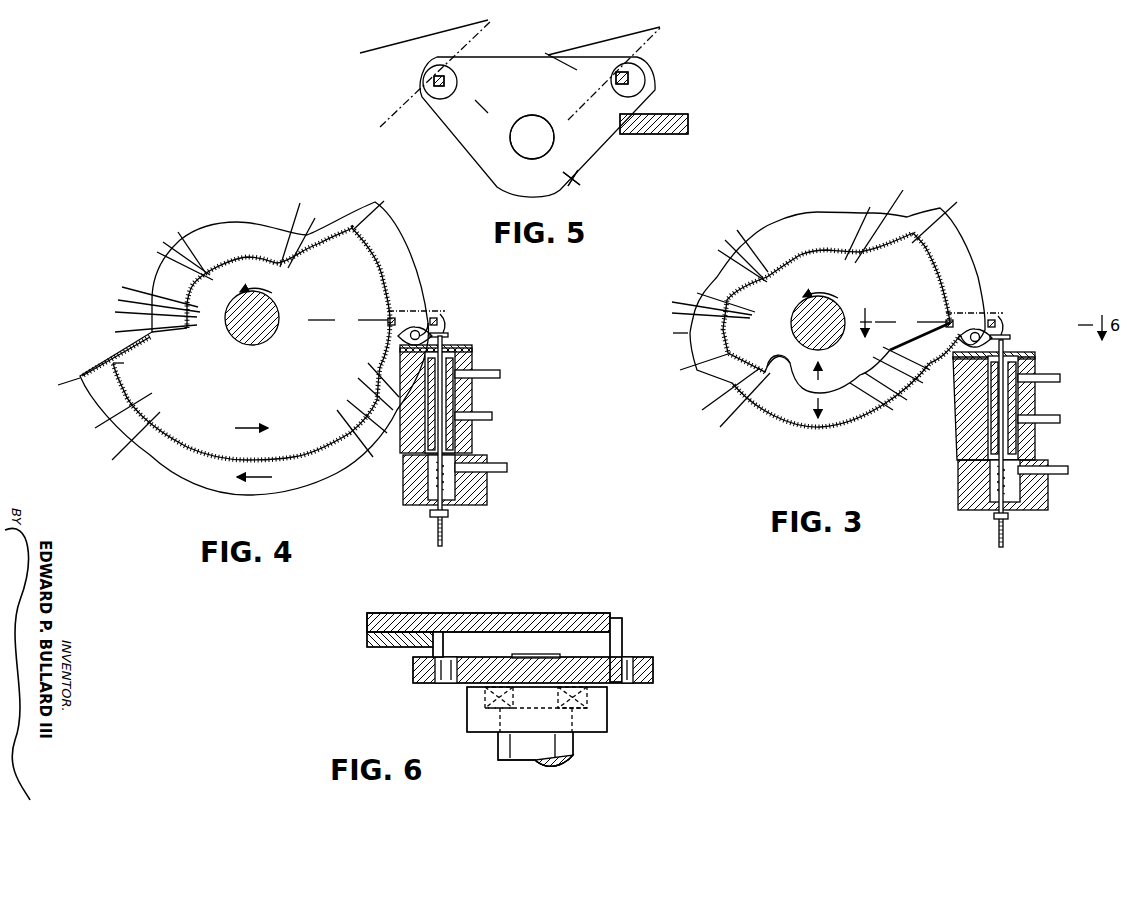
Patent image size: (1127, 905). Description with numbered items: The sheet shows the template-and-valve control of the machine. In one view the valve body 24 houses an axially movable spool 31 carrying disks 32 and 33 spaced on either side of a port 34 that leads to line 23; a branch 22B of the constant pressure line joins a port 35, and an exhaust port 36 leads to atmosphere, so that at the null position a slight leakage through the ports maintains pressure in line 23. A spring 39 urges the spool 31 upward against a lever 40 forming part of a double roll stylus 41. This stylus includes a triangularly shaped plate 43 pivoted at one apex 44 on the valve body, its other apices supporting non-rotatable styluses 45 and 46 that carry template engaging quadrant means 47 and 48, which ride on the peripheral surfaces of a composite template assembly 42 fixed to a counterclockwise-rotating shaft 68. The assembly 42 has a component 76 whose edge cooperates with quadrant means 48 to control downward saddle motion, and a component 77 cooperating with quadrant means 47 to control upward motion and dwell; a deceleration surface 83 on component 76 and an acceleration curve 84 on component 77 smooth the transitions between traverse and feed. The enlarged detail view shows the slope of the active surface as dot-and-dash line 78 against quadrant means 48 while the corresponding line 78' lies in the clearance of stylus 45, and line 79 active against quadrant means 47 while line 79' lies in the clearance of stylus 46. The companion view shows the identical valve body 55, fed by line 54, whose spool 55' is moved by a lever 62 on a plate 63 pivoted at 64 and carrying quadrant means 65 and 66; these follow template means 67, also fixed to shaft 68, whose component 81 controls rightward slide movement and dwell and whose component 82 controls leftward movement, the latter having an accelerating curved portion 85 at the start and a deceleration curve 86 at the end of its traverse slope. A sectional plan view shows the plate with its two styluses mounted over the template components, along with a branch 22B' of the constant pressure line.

In FIG. 3, the branch 22B is at (1067, 384).
In FIG. 4, the valve stem 22B' is at (500, 360).
In FIG. 3, the line 23 is at (1040, 417).
In FIG. 3, the valve body 24 is at (1045, 455).
In FIG. 3, the spool 31 is at (997, 450).
In FIG. 3, the disk 32 is at (987, 405).
In FIG. 3, the disk 33 is at (992, 437).
In FIG. 3, the port 34 is at (1040, 432).
In FIG. 3, the port 35 is at (1035, 390).
In FIG. 3, the exhaust port 36 is at (1048, 480).
In FIG. 3, the spring 39 is at (990, 505).
In FIG. 3, the lever 40 is at (1010, 338).
In FIG. 5, the lever 40 is at (688, 118).
In FIG. 3, the double roll stylus 41 is at (1023, 290).
In FIG. 5, the double roll stylus 41 is at (526, 44).
In FIG. 3, the template assembly 42 is at (945, 160).
In FIG. 6, the template assembly 42 is at (517, 603).
In FIG. 3, the triangularly shaped plate 43 is at (985, 330).
In FIG. 5, the triangularly shaped plate 43 is at (572, 176).
In FIG. 6, the triangularly shaped plate 43 is at (597, 690).
In FIG. 3, the apex 44 is at (968, 330).
In FIG. 5, the apex 44 is at (545, 140).
In FIG. 6, the apex 44 is at (575, 750).
In FIG. 5, the stylus 45 is at (438, 72).
In FIG. 6, the stylus 45 is at (443, 683).
In FIG. 5, the stylus 46 is at (643, 87).
In FIG. 6, the stylus 46 is at (630, 683).
In FIG. 3, the quadrant means 47 is at (948, 322).
In FIG. 5, the quadrant means 47 is at (440, 92).
In FIG. 6, the quadrant means 47 is at (435, 640).
In FIG. 3, the quadrant means 48 is at (1000, 320).
In FIG. 5, the quadrant means 48 is at (640, 70).
In FIG. 6, the quadrant means 48 is at (622, 635).
In FIG. 4, the line 54 is at (490, 416).
In FIG. 4, the valve body 55 is at (476, 429).
In FIG. 4, the spool 55' is at (504, 328).
In FIG. 4, the lever 62 is at (450, 332).
In FIG. 5, the lever 62 is at (654, 124).
In FIG. 4, the plate 63 is at (415, 330).
In FIG. 5, the plate 63 is at (571, 178).
In FIG. 6, the plate 63 is at (533, 670).
In FIG. 4, the pivot 64 is at (420, 333).
In FIG. 5, the pivot 64 is at (532, 137).
In FIG. 6, the pivot 64 is at (537, 726).
In FIG. 4, the quadrant means 65 is at (390, 322).
In FIG. 5, the quadrant means 65 is at (439, 81).
In FIG. 6, the quadrant means 65 is at (438, 644).
In FIG. 4, the quadrant means 66 is at (438, 322).
In FIG. 5, the quadrant means 66 is at (622, 78).
In FIG. 6, the quadrant means 66 is at (616, 650).
In FIG. 4, the template means 67 is at (226, 212).
In FIG. 6, the template means 67 is at (488, 630).
In FIG. 4, the shaft 68 is at (270, 322).
In FIG. 3, the shaft 68 is at (805, 336).
In FIG. 3, the template component 76 is at (816, 222).
In FIG. 6, the template component 76 is at (583, 612).
In FIG. 3, the template component 77 is at (897, 273).
In FIG. 5, the dot-and-dash line 78 is at (604, 29).
In FIG. 5, the line 78' is at (424, 30).
In FIG. 5, the dot-and-dash line 79 is at (477, 103).
In FIG. 5, the line 79' is at (568, 48).
In FIG. 4, the template component 81 is at (261, 392).
In FIG. 4, the template component 82 is at (283, 206).
In FIG. 6, the template component 82 is at (488, 622).
In FIG. 3, the deceleration surface 83 is at (925, 360).
In FIG. 3, the acceleration curve 84 is at (786, 371).
In FIG. 4, the accelerating curved portion 85 is at (80, 376).
In FIG. 4, the deceleration curve 86 is at (185, 330).